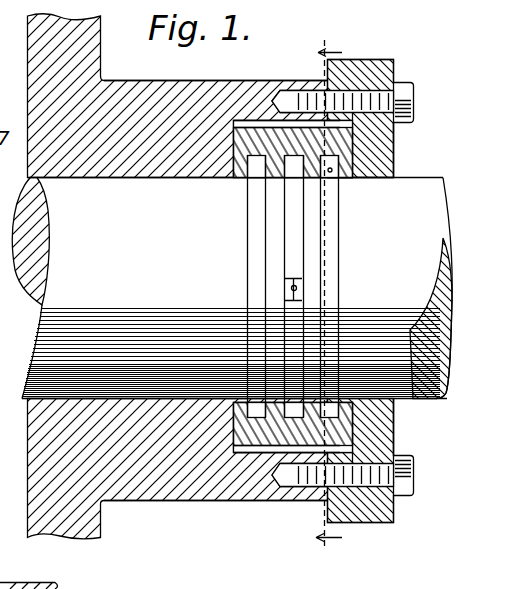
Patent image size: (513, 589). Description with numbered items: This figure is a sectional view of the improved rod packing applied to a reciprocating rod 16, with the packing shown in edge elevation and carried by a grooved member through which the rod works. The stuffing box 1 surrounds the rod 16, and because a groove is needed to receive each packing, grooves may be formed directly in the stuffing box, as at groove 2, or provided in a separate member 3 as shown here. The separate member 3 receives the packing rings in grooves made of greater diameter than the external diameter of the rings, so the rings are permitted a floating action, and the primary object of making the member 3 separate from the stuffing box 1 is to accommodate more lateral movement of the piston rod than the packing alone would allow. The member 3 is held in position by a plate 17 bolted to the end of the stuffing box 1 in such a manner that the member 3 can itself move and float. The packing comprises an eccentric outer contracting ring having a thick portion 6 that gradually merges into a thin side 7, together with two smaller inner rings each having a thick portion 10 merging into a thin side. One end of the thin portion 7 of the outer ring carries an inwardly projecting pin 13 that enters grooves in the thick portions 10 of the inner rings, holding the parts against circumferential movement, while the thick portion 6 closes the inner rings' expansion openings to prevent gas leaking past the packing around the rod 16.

The stuffing box 1 is at (110, 92).
The groove 2 is at (216, 270).
The separate member 3 is at (352, 140).
The thick portion of the outer ring 6 is at (240, 238).
The thin side of the outer ring 7 is at (332, 216).
The thick portion of the inner ring 10 is at (283, 320).
The pin 13 is at (297, 288).
The rod 16 is at (232, 288).
The plate 17 is at (395, 153).